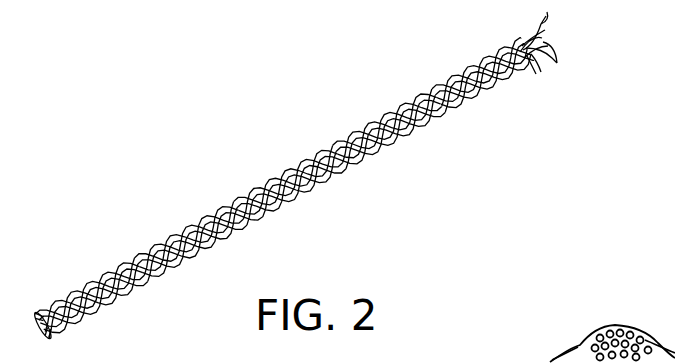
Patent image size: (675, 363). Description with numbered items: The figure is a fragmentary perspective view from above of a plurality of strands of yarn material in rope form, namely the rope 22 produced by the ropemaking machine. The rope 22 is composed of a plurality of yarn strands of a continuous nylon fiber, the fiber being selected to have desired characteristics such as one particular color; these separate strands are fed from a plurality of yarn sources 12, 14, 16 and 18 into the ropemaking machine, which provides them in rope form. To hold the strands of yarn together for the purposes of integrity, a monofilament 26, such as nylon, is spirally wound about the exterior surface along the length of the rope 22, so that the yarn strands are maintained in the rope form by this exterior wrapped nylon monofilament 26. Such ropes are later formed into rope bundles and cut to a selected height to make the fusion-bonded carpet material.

The yarn source 12 is at (533, 36).
The yarn source 14 is at (559, 25).
The yarn source 16 is at (565, 60).
The yarn source 18 is at (544, 82).
The rope 22 is at (288, 185).
The monofilament 26 is at (397, 125).